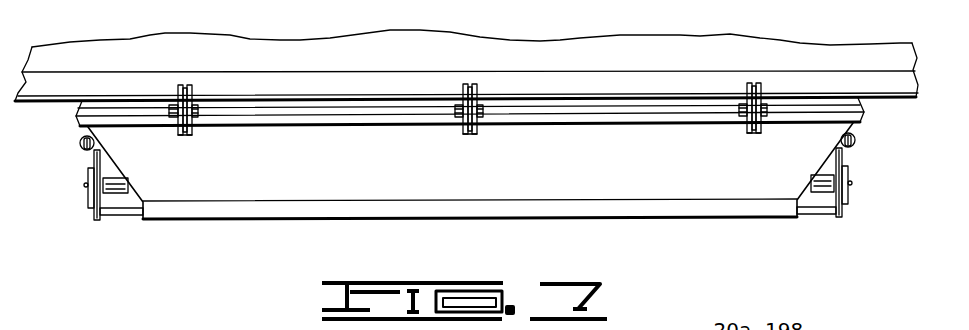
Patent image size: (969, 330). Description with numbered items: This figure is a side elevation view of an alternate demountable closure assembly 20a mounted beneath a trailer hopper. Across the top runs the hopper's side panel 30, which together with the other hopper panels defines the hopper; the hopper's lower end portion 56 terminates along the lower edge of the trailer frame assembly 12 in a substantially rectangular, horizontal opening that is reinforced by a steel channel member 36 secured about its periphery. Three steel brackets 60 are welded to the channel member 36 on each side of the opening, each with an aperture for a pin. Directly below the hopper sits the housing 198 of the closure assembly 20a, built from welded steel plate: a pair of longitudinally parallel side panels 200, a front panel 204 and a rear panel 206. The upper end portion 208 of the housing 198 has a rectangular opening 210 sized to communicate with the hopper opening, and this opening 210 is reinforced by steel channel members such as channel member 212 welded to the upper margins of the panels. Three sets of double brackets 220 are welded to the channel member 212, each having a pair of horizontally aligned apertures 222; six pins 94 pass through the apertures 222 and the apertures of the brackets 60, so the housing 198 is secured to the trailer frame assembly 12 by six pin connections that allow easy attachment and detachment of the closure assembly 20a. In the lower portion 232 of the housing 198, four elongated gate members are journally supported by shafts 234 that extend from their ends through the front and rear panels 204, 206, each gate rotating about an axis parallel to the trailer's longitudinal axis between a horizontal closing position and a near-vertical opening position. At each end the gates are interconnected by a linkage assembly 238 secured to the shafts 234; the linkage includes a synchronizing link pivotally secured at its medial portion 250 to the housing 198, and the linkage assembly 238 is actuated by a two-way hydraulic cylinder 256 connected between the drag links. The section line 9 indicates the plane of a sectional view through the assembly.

The section line 9 is at (867, 32).
The trailer frame assembly 12 is at (741, 27).
The demountable closure assembly 20a is at (848, 96).
The side panel 30 is at (410, 40).
The steel channel member 36 is at (677, 78).
The lower end portion 56 is at (302, 107).
The steel bracket 60 is at (192, 87).
The pin 94 is at (178, 108).
The housing 198 is at (352, 192).
The side panel 200 is at (497, 134).
The front panel 204 is at (122, 186).
The rear panel 206 is at (812, 183).
The upper end portion 208 is at (330, 143).
The rectangular opening 210 is at (605, 100).
The steel channel member 212 is at (532, 108).
The double bracket 220 is at (191, 126).
The aperture 222 is at (170, 110).
The lower portion 232 is at (558, 220).
The shaft 234 is at (110, 213).
The linkage assembly 238 is at (93, 160).
The medial portion 250 is at (84, 185).
The two-way hydraulic cylinder 256 is at (80, 143).